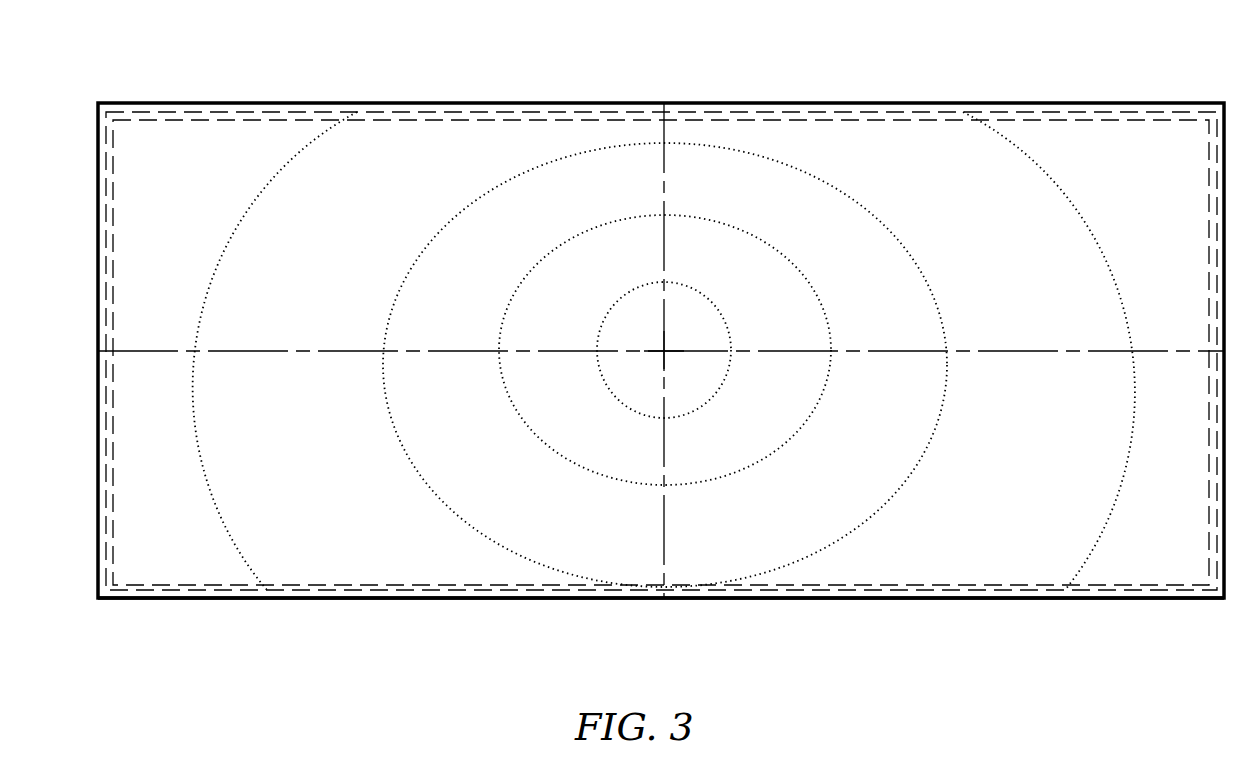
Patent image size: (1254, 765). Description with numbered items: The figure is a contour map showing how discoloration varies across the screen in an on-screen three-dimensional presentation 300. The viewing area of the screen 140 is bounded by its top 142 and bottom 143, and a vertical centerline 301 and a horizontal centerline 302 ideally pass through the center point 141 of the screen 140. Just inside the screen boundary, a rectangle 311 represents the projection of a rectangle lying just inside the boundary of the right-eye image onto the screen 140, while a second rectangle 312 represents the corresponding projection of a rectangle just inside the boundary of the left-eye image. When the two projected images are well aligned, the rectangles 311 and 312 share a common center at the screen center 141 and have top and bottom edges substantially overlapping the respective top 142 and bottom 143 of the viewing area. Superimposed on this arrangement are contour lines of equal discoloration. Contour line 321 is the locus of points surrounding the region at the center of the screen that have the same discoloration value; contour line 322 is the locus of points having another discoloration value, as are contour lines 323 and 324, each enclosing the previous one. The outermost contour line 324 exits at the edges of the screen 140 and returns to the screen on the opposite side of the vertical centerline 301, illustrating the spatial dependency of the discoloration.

The on-screen 3D presentation 300 is at (661, 371).
The screen 140 is at (661, 312).
The center point 141 is at (664, 351).
The top 142 is at (307, 103).
The bottom 143 is at (348, 600).
The vertical centerline 301 is at (664, 250).
The horizontal centerline 302 is at (770, 351).
The rectangle 311 is at (236, 112).
The rectangle 312 is at (176, 120).
The contour line 321 is at (607, 389).
The contour line 322 is at (512, 399).
The contour line 323 is at (391, 419).
The contour line 324 is at (207, 492).